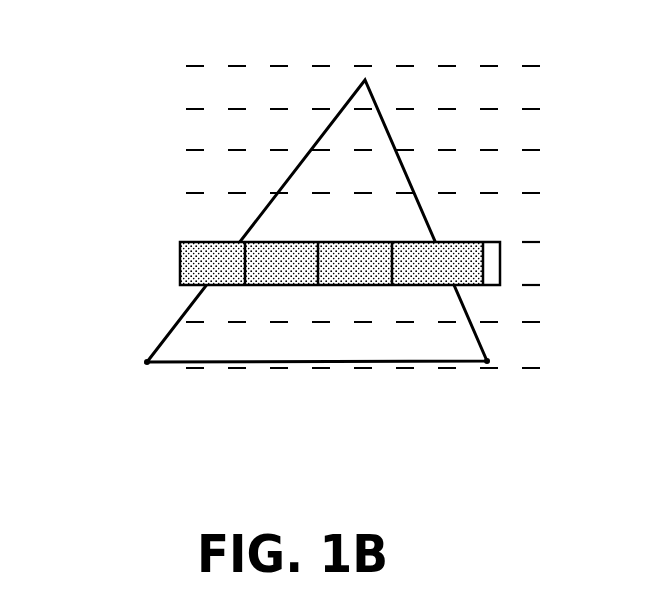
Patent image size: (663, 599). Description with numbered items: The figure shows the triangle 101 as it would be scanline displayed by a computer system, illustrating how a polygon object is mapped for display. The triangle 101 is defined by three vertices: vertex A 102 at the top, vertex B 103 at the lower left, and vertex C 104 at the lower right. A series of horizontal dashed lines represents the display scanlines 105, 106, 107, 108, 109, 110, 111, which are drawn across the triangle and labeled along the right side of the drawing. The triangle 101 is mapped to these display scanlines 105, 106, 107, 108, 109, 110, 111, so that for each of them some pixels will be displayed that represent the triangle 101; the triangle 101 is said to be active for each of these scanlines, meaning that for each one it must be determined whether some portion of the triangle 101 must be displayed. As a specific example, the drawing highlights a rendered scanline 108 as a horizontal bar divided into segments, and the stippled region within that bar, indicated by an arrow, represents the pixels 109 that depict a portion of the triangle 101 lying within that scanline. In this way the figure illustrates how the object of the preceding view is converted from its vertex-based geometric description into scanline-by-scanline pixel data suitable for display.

The triangle 101 is at (340, 246).
The vertex A 102 is at (317, 183).
The vertex B 103 is at (123, 376).
The vertex C 104 is at (506, 371).
The display scanline 105 is at (397, 86).
The display scanline 106 is at (397, 129).
The display scanline 107 is at (397, 171).
The rendered scanline 108 is at (397, 215).
The pixels 109 is at (293, 235).
The display scanline 110 is at (397, 310).
The display scanline 111 is at (396, 353).